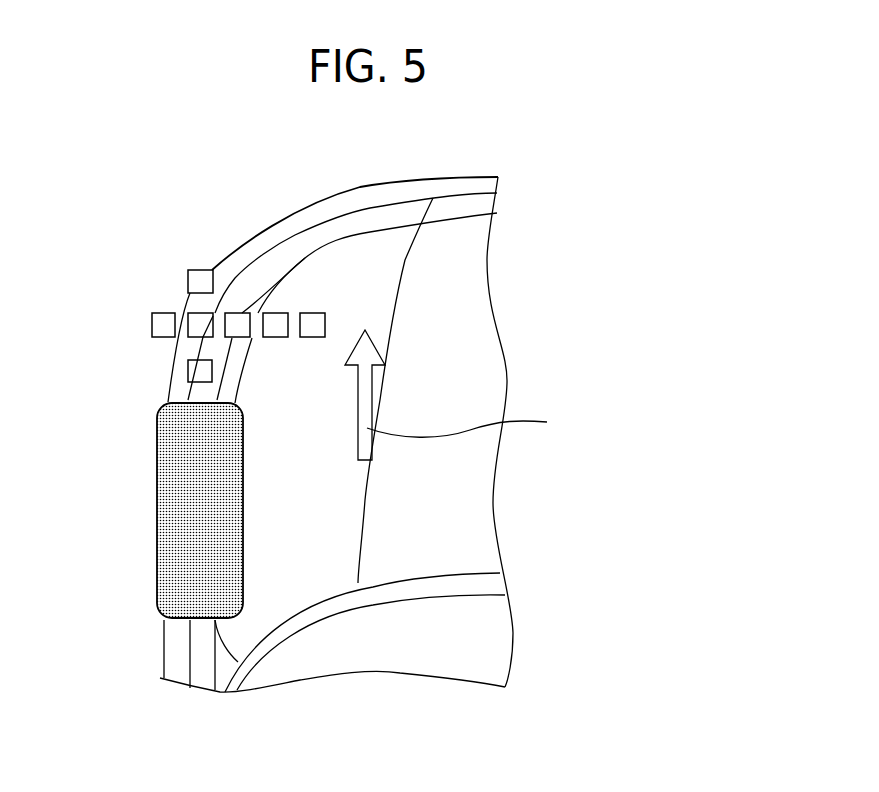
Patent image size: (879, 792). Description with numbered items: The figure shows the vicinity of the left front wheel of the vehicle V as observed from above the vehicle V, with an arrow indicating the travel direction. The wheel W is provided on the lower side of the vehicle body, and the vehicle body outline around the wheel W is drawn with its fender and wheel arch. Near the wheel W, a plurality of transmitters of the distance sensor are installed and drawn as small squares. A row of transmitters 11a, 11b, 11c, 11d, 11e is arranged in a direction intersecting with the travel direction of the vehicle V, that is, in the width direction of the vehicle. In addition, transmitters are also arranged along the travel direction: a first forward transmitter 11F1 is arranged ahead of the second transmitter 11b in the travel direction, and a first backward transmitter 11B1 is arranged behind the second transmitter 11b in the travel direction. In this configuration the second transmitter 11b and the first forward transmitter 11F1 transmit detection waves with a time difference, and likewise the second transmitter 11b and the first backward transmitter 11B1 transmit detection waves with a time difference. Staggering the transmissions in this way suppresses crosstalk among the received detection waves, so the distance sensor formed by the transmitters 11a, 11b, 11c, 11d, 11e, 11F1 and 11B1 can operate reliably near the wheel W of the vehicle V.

The vehicle V is at (483, 157).
The wheel W is at (136, 570).
The first forward transmitter 11F1 is at (188, 280).
The transmitter 11a is at (152, 325).
The second transmitter 11b is at (203, 330).
The transmitter 11c is at (240, 325).
The transmitter 11d is at (275, 328).
The transmitter 11e is at (313, 328).
The first backward transmitter 11B1 is at (196, 368).